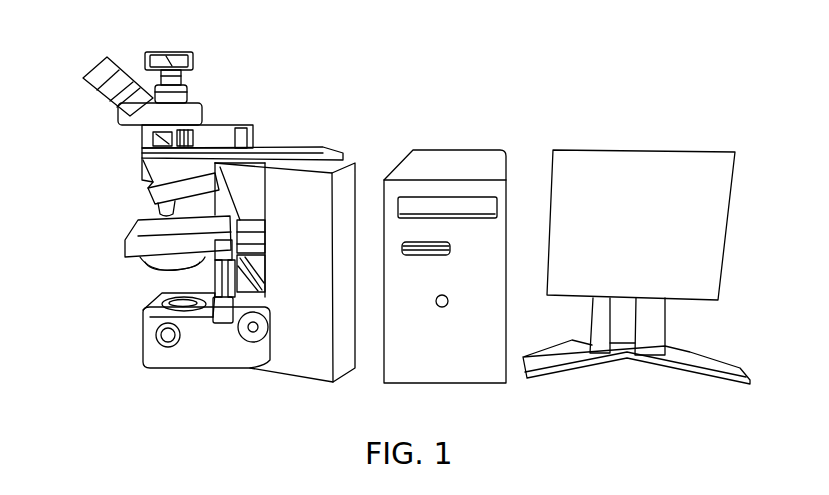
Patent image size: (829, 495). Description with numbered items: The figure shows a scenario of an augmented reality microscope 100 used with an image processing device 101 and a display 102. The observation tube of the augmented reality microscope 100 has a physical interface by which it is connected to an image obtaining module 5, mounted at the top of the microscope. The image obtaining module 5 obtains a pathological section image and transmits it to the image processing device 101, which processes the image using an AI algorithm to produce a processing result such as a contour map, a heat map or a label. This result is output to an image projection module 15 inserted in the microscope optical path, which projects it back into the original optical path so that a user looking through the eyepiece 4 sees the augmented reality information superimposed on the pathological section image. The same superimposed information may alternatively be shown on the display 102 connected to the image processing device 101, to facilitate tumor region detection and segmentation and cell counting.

The eyepiece 4 is at (88, 91).
The image obtaining module 5 is at (194, 60).
The image projection module 15 is at (259, 121).
The augmented reality microscope 100 is at (213, 233).
The image processing device 101 is at (463, 146).
The display 102 is at (612, 146).